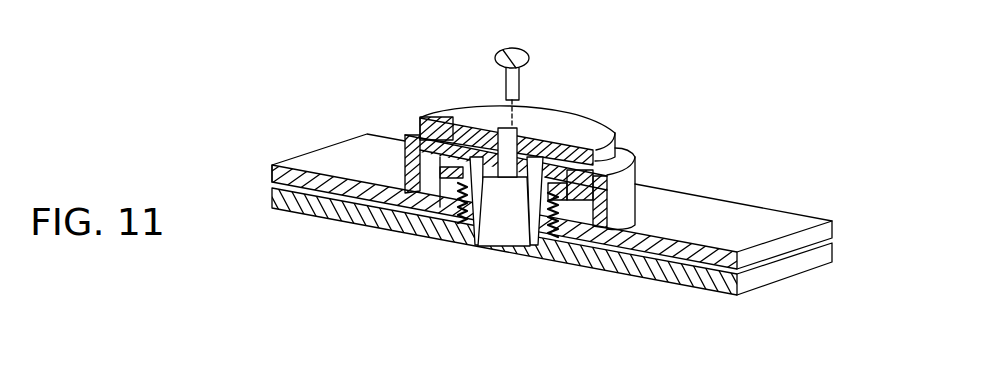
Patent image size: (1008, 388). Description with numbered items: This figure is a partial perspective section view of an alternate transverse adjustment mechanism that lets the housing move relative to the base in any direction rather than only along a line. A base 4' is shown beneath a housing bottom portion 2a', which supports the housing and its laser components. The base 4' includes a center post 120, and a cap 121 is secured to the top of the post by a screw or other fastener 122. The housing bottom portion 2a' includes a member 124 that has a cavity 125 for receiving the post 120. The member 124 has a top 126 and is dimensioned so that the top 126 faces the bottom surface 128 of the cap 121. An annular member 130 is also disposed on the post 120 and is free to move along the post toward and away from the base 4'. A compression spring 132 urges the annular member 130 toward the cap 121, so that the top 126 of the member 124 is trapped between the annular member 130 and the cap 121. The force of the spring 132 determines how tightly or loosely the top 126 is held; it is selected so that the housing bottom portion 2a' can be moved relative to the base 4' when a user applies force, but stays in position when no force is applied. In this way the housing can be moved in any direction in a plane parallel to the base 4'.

The housing bottom portion 2a' is at (553, 201).
The base 4' is at (552, 272).
The center post 120 is at (480, 237).
The cap 121 is at (570, 125).
The screw or other fastener 122 is at (530, 60).
The member 124 is at (620, 188).
The cavity 125 is at (437, 207).
The top 126 is at (618, 170).
The bottom surface 128 is at (444, 88).
The annular member 130 is at (573, 200).
The compression spring 132 is at (463, 222).